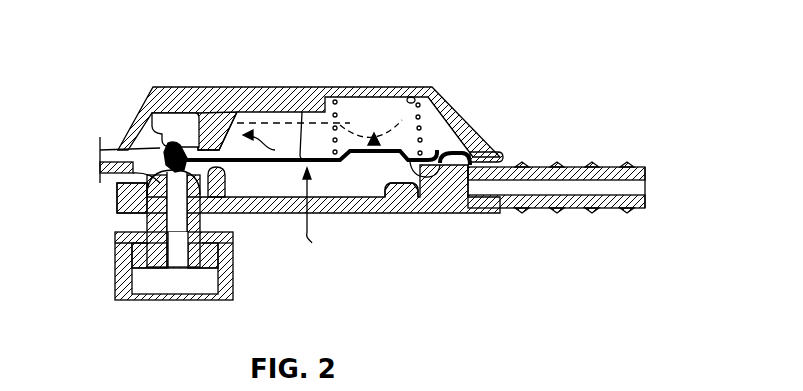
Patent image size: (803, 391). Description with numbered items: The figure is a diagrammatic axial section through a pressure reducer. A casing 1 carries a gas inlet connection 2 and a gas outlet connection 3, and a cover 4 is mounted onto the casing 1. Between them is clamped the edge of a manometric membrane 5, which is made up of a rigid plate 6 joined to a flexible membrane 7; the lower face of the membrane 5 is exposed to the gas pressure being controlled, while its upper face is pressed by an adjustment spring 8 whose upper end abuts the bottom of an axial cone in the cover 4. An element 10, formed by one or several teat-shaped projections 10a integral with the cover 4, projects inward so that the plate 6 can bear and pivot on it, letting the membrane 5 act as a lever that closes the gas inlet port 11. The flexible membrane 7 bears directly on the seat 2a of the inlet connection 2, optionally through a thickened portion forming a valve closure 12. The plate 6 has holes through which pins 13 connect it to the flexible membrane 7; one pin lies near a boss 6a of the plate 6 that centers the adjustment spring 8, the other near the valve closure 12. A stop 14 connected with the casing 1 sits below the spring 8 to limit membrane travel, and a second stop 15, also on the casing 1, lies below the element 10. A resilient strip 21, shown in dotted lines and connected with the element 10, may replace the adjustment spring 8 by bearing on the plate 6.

The casing 1 is at (295, 218).
The gas inlet connection 2 is at (205, 283).
The seat 2a is at (117, 230).
The gas outlet connection 3 is at (637, 190).
The cover 4 is at (184, 104).
The manometric membrane 5 is at (314, 211).
The rigid plate 6 is at (303, 145).
The boss 6a is at (344, 150).
The flexible membrane 7 is at (447, 140).
The adjustment spring 8 is at (412, 100).
The element 10 is at (272, 142).
The teat-shaped projection 10a is at (217, 138).
The gas inlet port 11 is at (118, 203).
The valve closure 12 is at (100, 168).
The pins 13 is at (171, 142).
The stop 14 is at (400, 198).
The second stop 15 is at (242, 218).
The resilient strip 21 is at (397, 122).